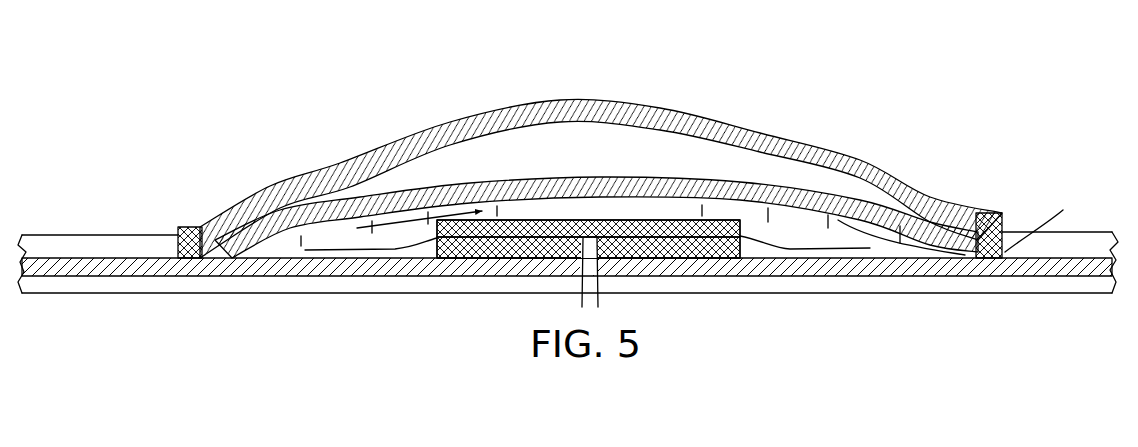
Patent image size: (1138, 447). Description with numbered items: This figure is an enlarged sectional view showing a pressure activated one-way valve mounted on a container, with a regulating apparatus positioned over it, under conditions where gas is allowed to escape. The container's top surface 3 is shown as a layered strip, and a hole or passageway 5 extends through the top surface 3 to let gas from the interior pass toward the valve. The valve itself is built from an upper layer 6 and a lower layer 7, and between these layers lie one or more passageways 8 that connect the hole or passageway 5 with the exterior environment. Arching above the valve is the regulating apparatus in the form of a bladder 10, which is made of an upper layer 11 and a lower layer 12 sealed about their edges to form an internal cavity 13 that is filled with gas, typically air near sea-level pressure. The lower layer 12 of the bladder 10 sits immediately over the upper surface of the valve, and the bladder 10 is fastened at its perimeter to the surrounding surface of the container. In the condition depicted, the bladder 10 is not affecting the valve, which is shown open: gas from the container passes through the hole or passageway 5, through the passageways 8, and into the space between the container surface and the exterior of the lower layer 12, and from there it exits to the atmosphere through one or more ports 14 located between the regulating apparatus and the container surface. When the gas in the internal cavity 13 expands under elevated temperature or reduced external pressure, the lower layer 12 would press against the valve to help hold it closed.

The top surface 3 is at (100, 277).
The hole or passageway 5 is at (605, 277).
The upper layer 6 is at (540, 220).
The lower layer 7 is at (515, 277).
The passageways 8 is at (470, 277).
The bladder 10 is at (590, 172).
The upper layer 11 is at (406, 138).
The lower layer 12 is at (336, 188).
The internal cavity 13 is at (616, 159).
The ports 14 is at (990, 277).